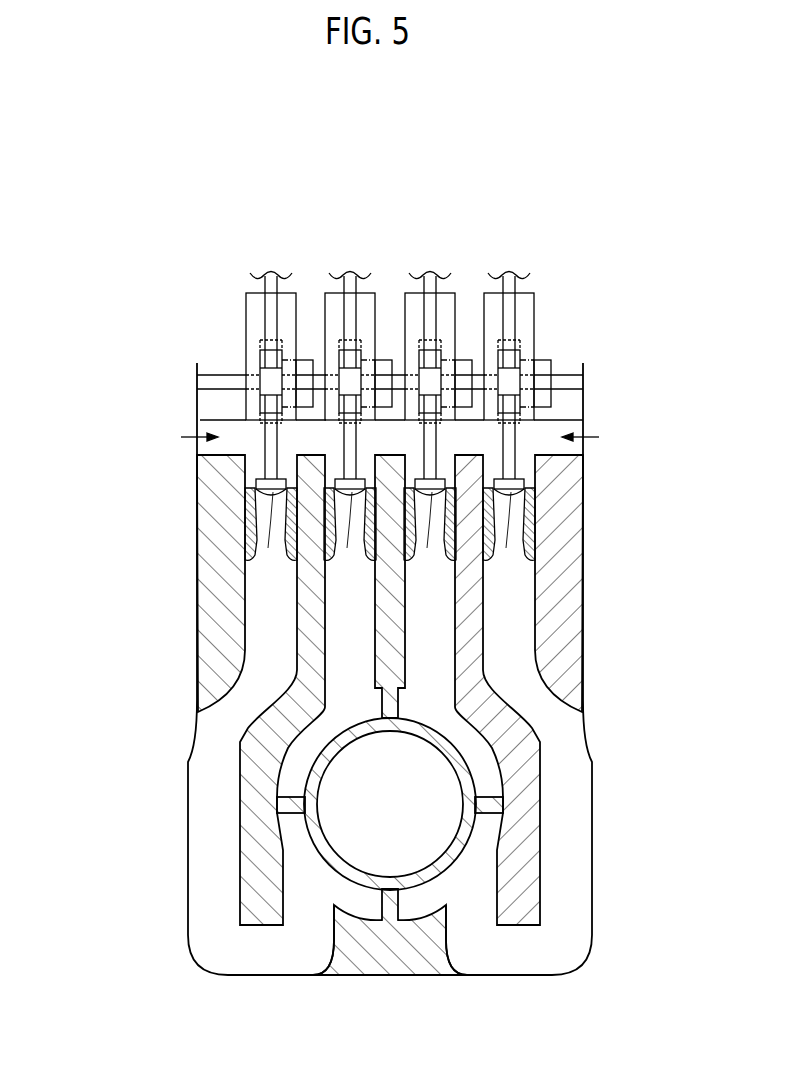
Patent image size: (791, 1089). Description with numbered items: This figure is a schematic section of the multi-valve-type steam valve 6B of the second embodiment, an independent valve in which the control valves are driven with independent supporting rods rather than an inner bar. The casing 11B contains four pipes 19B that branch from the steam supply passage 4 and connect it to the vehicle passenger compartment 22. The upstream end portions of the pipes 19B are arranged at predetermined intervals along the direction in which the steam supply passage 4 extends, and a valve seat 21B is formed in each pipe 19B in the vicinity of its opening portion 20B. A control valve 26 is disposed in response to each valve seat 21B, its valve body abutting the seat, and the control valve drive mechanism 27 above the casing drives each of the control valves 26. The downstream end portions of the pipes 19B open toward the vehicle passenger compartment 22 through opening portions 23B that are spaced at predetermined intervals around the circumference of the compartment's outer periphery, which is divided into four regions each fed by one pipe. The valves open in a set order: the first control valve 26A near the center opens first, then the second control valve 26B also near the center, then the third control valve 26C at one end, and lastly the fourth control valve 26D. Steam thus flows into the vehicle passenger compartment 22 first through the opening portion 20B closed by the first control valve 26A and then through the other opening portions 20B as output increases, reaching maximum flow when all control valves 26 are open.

The multi-valve-type steam valve 6B is at (570, 188).
The control valve drive mechanism 27 is at (576, 277).
The opening portion 20B is at (247, 463).
The steam supply passage 4 is at (212, 447).
The valve seat 21B is at (250, 532).
The casing 11B is at (558, 577).
The third control valve 26C is at (272, 522).
The first control valve 26A is at (350, 522).
The second control valve 26B is at (429, 522).
The fourth control valve 26D is at (508, 522).
The control valve 26 is at (390, 522).
The pipe 19B is at (357, 640).
The opening portion 23B is at (295, 797).
The vehicle passenger compartment 22 is at (400, 805).